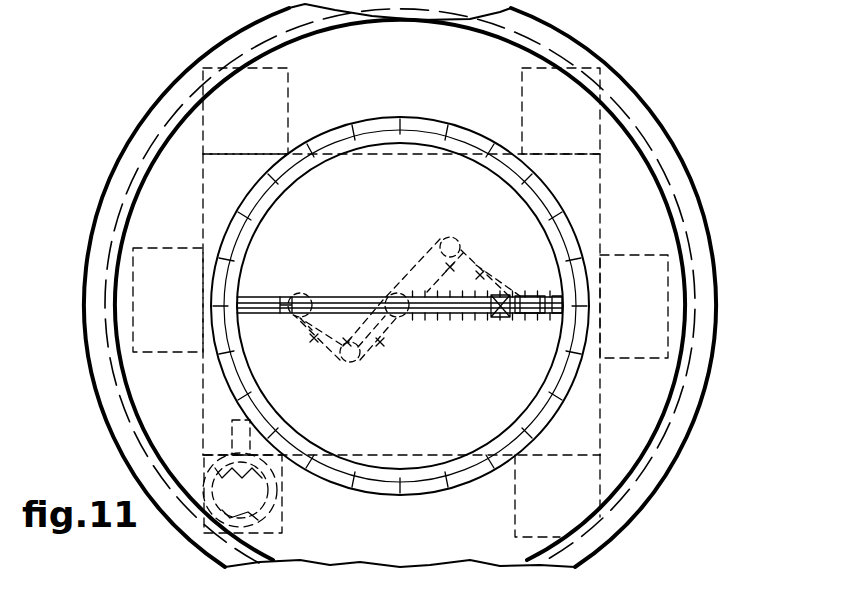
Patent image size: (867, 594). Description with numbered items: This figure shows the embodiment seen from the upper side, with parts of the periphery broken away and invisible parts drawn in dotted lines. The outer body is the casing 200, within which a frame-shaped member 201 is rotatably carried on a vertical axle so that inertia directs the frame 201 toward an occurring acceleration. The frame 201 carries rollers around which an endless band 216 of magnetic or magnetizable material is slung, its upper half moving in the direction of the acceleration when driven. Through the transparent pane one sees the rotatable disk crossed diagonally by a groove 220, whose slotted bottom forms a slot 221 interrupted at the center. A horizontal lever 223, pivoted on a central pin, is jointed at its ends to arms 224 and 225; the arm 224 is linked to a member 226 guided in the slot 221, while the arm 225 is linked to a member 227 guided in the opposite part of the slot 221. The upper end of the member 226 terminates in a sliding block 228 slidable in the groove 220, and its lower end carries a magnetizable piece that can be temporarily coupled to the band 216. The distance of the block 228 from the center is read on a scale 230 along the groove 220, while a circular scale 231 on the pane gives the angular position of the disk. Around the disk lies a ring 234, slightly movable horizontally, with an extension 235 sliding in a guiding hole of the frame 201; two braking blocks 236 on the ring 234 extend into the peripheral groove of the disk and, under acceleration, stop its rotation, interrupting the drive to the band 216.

The casing 200 is at (160, 118).
The frame-shaped member 201 is at (133, 248).
The endless belt or band 216 is at (593, 183).
The circular scale 231 is at (490, 153).
The groove 220 is at (271, 311).
The slot 221 is at (243, 298).
The member 227 is at (286, 298).
The arm 224 is at (508, 295).
The member 226 is at (522, 296).
The sliding block 228 is at (500, 320).
The scale 230 is at (557, 323).
The horizontal lever 223 is at (378, 340).
The arm 225 is at (323, 327).
The ring 234 is at (282, 509).
The extension 235 is at (232, 436).
The braking block 236 is at (237, 470).